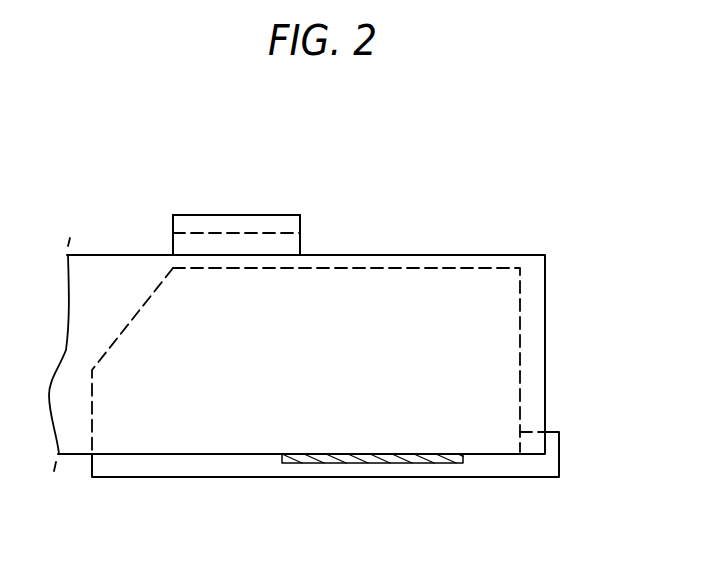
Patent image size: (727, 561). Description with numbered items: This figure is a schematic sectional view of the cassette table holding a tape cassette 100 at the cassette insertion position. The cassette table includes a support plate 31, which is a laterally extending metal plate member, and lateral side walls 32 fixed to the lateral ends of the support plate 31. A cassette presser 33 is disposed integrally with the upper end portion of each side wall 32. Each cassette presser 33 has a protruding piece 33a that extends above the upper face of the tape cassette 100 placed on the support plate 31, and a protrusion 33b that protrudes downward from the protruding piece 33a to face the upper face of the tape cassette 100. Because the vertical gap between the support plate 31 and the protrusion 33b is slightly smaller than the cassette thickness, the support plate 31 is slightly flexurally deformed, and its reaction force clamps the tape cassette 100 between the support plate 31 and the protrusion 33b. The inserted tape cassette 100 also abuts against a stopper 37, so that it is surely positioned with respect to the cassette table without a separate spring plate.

The tape cassette 100 is at (118, 255).
The lateral side wall 32 is at (520, 315).
The stopper 37 is at (553, 443).
The cassette presser 33 is at (230, 215).
The protruding piece 33a is at (268, 222).
The protrusion 33b is at (300, 243).
The support plate 31 is at (358, 463).